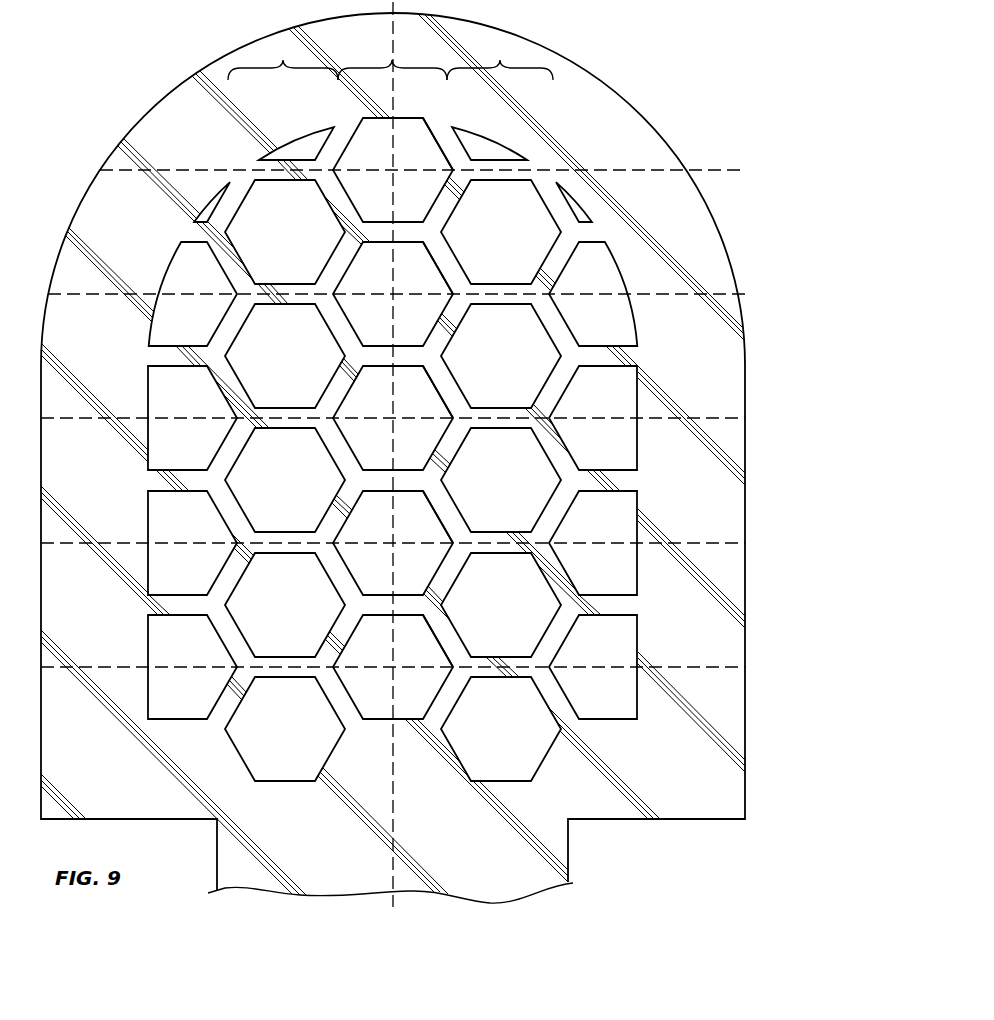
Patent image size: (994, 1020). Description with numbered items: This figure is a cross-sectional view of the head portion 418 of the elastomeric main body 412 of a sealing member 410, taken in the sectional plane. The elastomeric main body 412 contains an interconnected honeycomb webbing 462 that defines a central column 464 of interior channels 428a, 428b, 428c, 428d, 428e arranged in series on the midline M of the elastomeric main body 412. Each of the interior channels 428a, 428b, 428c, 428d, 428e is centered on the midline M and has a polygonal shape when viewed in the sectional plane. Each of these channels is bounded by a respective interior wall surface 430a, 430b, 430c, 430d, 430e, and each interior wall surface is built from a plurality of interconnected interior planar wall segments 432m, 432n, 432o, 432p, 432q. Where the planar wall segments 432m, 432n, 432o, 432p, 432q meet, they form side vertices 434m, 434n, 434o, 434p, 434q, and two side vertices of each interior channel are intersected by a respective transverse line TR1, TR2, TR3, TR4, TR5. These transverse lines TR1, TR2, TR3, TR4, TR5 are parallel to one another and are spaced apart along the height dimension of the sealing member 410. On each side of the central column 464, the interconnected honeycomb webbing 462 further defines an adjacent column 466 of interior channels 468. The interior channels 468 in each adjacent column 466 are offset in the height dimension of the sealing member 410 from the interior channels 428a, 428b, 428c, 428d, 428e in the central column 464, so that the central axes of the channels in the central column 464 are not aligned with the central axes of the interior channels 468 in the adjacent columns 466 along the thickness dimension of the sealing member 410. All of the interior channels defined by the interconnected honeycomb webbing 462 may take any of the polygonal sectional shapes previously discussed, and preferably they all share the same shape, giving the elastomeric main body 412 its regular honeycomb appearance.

The sealing member 410 is at (120, 55).
The elastomeric main body 412 is at (660, 763).
The head portion 418 is at (750, 735).
The interior channel 428a is at (372, 141).
The interior channel 428b is at (370, 267).
The interior channel 428c is at (372, 393).
The interior channel 428d is at (372, 518).
The interior channel 428e is at (372, 642).
The interior wall surface 430a is at (433, 134).
The interior wall surface 430b is at (423, 252).
The interior wall surface 430c is at (423, 367).
The interior wall surface 430d is at (423, 500).
The interior wall surface 430e is at (423, 623).
The interior planar wall segment 432m is at (348, 198).
The interior planar wall segment 432n is at (348, 322).
The interior planar wall segment 432o is at (348, 446).
The interior planar wall segment 432p is at (348, 570).
The interior planar wall segment 432q is at (348, 692).
The side vertex 434m is at (452, 170).
The side vertex 434n is at (452, 294).
The side vertex 434o is at (452, 418).
The side vertex 434p is at (452, 543).
The side vertex 434q is at (452, 667).
The interconnected honeycomb webbing 462 is at (228, 452).
The central column 464 is at (392, 60).
The adjacent column 466 is at (283, 60).
The interior channel 468 is at (250, 324).
The transverse line TR1 is at (634, 168).
The transverse line TR2 is at (703, 293).
The transverse line TR3 is at (706, 417).
The transverse line TR4 is at (702, 542).
The transverse line TR5 is at (702, 666).
The midline M is at (393, 818).